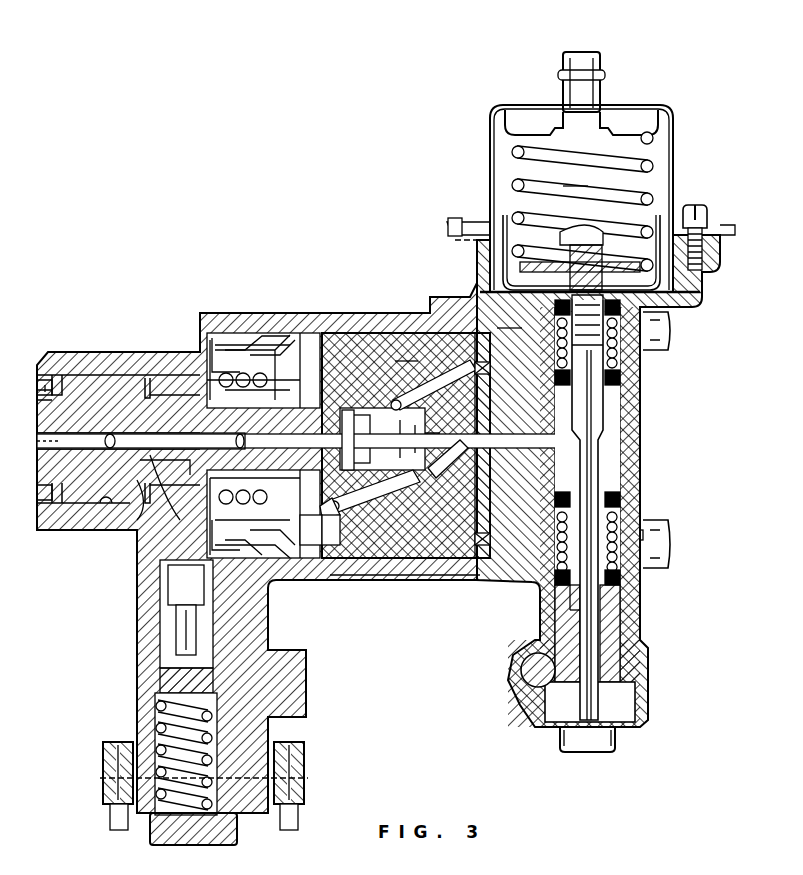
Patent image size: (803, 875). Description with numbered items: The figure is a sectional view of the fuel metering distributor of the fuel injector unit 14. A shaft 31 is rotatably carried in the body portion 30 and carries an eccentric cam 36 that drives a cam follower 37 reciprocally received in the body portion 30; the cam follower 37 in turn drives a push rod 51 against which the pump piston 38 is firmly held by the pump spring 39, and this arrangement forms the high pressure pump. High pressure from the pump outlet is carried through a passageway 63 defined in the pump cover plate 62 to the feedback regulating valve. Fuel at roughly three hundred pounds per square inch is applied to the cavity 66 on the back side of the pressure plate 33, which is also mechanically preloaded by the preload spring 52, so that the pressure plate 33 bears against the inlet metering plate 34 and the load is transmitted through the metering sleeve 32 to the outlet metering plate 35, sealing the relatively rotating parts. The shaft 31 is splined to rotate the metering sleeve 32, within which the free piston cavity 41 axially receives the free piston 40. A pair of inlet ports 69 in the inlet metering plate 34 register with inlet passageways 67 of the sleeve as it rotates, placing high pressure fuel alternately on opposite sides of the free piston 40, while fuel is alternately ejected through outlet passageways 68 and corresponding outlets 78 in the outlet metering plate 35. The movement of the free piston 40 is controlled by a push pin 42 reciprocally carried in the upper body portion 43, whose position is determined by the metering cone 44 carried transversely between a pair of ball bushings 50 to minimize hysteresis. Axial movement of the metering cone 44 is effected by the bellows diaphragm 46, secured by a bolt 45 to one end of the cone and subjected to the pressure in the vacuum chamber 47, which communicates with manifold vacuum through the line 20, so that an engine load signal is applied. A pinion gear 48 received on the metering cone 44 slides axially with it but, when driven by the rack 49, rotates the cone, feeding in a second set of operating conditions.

The fuel injector unit 14 is at (688, 540).
The line 20 is at (572, 52).
The body portion 30 is at (415, 305).
The shaft 31 is at (128, 520).
The metering sleeve 32 is at (406, 445).
The pressure plate 33 is at (304, 560).
The inlet metering plate 34 is at (320, 558).
The outlet metering plate 35 is at (488, 588).
The eccentric cam 36 is at (140, 530).
The cam follower 37 is at (185, 490).
The pump piston 38 is at (168, 688).
The pump spring 39 is at (160, 722).
The free piston 40 is at (428, 478).
The free piston cavity 41 is at (448, 475).
The push pin 42 is at (510, 440).
The upper body portion 43 is at (470, 275).
The metering cone 44 is at (585, 407).
The bolt 45 is at (610, 228).
The bellows diaphragm 46 is at (707, 222).
The vacuum chamber 47 is at (582, 201).
The pinion gear 48 is at (620, 640).
The rack 49 is at (526, 682).
The ball bushings 50 is at (622, 372).
The push rod 51 is at (180, 647).
The preload spring 52 is at (218, 378).
The pump cover plate 62 is at (218, 840).
The passageway 63 is at (242, 775).
The cavity 66 is at (222, 350).
The inlet passageways 67 is at (350, 503).
The outlet passageways 68 is at (400, 388).
The inlet ports 69 is at (330, 375).
The outlets 78 is at (492, 368).